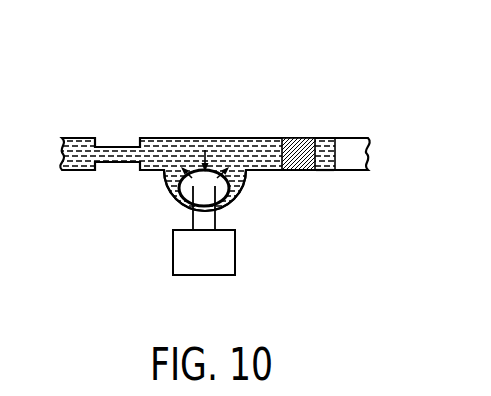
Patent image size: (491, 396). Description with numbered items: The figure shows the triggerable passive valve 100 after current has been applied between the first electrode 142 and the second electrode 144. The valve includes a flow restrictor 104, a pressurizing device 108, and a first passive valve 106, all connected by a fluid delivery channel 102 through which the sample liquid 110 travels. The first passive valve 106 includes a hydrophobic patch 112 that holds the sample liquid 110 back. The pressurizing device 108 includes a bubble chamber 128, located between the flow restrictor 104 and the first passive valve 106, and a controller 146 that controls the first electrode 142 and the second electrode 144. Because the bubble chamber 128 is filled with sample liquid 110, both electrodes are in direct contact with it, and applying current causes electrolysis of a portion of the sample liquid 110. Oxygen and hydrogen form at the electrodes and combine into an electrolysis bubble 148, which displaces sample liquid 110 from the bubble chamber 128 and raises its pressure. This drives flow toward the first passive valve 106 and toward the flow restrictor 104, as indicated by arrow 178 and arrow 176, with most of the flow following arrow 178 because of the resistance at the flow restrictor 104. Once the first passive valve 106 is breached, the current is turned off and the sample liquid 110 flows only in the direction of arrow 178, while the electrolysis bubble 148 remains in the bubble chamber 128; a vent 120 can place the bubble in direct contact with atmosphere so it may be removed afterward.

The triggerable passive valve 100 is at (327, 98).
The fluid delivery channel 102 is at (168, 138).
The flow restrictor 104 is at (117, 147).
The first passive valve 106 is at (300, 172).
The pressurizing device 108 is at (307, 237).
The sample liquid 110 is at (215, 150).
The hydrophobic patch 112 is at (290, 137).
The vent 120 is at (169, 203).
The bubble chamber 128 is at (242, 190).
The first electrode 142 is at (187, 212).
The second electrode 144 is at (219, 209).
The controller 146 is at (205, 276).
The electrolysis bubble 148 is at (188, 200).
The arrow 176 is at (52, 159).
The arrow 178 is at (343, 154).